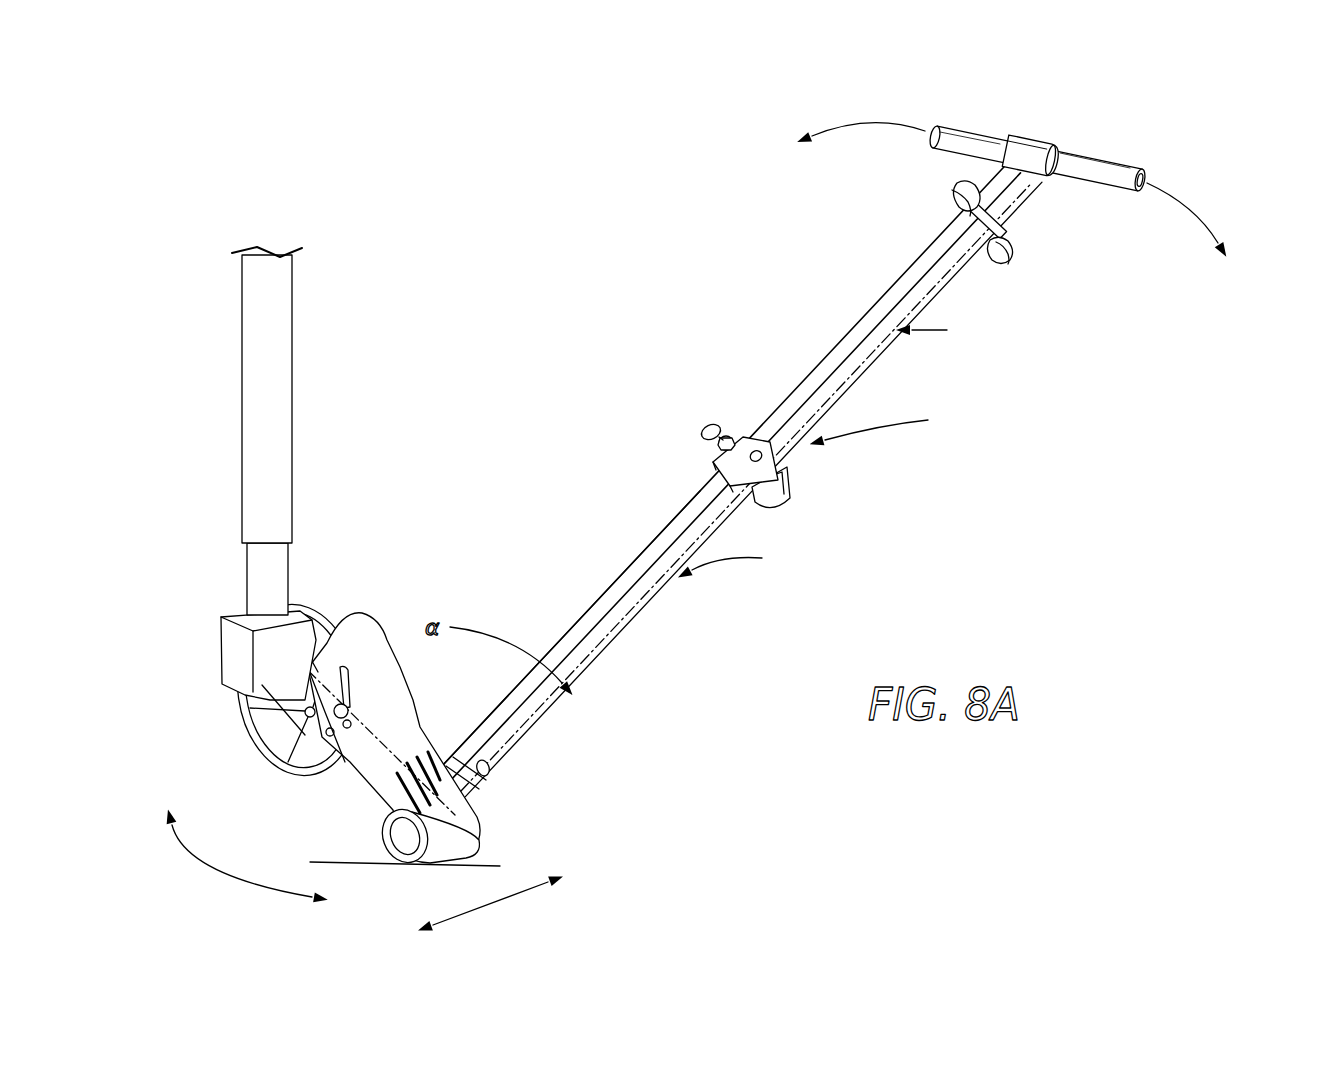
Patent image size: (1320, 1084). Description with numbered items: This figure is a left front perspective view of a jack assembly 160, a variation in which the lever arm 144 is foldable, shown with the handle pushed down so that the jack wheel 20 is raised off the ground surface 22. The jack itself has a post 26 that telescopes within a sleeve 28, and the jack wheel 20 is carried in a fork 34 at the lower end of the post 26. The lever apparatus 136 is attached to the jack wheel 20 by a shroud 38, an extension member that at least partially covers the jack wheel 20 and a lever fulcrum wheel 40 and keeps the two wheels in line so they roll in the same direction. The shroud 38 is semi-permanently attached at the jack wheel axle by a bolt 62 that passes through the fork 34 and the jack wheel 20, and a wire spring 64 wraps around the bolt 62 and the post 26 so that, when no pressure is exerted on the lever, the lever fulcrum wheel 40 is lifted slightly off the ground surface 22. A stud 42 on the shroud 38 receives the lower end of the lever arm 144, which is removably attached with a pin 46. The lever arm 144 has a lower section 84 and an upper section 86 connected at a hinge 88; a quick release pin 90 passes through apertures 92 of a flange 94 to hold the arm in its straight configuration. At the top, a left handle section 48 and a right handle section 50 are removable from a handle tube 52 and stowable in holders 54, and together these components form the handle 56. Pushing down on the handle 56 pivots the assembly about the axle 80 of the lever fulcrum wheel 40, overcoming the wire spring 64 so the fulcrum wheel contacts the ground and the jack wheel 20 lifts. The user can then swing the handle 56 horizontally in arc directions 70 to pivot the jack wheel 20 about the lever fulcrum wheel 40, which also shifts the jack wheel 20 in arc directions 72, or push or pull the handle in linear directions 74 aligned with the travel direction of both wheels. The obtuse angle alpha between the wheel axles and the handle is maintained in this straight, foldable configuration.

The jack wheel 20 is at (250, 752).
The ground surface 22 is at (455, 866).
The post 26 is at (283, 583).
The sleeve 28 is at (275, 428).
The fork 34 is at (217, 653).
The shroud 38 is at (420, 727).
The lever fulcrum wheel 40 is at (390, 838).
The stud 42 is at (465, 790).
The pin 46 is at (492, 770).
The left handle section 48 is at (1113, 165).
The right handle section 50 is at (955, 133).
The handle tube 52 is at (1040, 140).
The holders 54 is at (950, 192).
The handle 56 is at (1078, 140).
The bolt 62 is at (350, 712).
The wire spring 64 is at (352, 698).
The arc arrows 70 is at (857, 122).
The arc directions 72 is at (237, 866).
The linear directions 74 is at (492, 906).
The axle 80 is at (475, 830).
The lower section 84 is at (612, 603).
The upper section 86 is at (830, 357).
The hinge 88 is at (782, 468).
The quick release pin 90 is at (722, 435).
The apertures 92 is at (720, 455).
The flange 94 is at (712, 470).
The lever apparatus 136 is at (749, 560).
The lever arm 144 is at (951, 332).
The jack assembly 160 is at (899, 425).